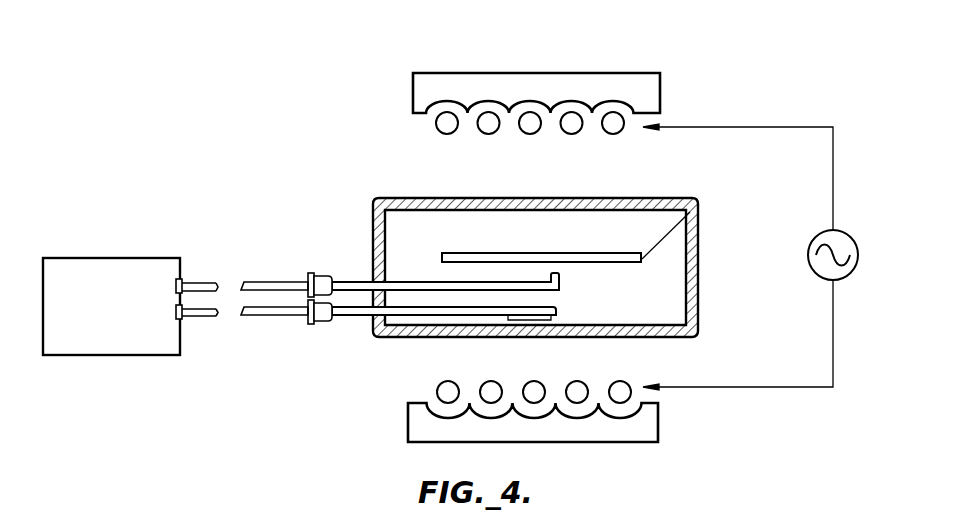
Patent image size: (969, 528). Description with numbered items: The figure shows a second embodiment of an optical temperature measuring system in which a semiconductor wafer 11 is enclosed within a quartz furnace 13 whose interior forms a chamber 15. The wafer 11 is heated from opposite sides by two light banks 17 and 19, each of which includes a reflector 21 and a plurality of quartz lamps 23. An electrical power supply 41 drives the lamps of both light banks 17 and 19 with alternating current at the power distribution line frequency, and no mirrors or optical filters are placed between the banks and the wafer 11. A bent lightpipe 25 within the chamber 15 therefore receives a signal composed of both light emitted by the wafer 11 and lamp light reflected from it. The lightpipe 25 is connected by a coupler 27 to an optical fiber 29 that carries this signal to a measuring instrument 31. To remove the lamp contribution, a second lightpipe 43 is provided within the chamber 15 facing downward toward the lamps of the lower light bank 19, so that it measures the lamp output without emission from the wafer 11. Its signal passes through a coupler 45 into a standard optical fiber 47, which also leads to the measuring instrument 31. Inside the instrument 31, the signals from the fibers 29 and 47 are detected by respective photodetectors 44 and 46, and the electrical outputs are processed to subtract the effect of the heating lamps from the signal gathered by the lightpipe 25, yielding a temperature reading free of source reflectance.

The semiconductor wafer 11 is at (696, 213).
The quartz furnace 13 is at (694, 267).
The chamber 15 is at (676, 253).
The light bank 17 is at (521, 119).
The light bank 19 is at (392, 426).
The reflector 21 is at (659, 96).
The quartz lamps 23 is at (616, 134).
The bent lightpipe 25 is at (561, 284).
The coupler 27 is at (312, 276).
The optical fiber 29 is at (245, 282).
The measuring instrument 31 is at (157, 258).
The electrical power supply 41 is at (849, 238).
The second lightpipe 43 is at (507, 321).
The photodetector 44 is at (184, 282).
The coupler 45 is at (324, 323).
The photodetector 46 is at (184, 319).
The optical fiber 47 is at (255, 317).